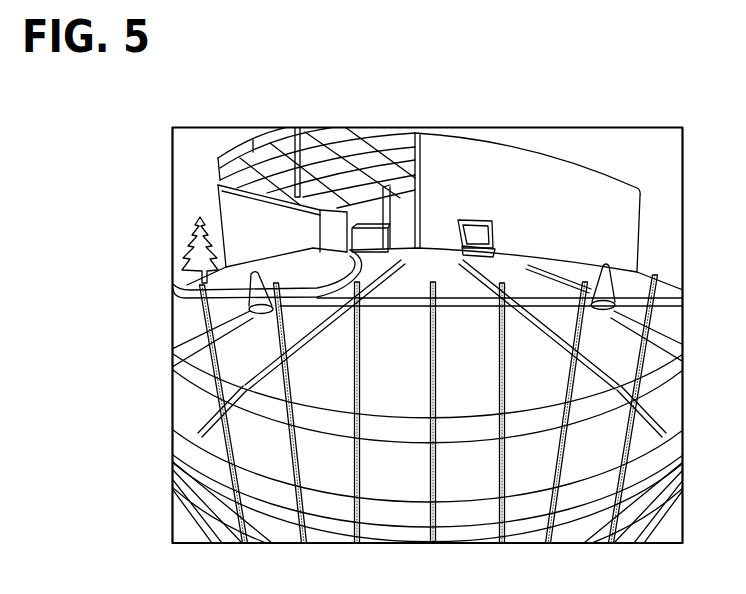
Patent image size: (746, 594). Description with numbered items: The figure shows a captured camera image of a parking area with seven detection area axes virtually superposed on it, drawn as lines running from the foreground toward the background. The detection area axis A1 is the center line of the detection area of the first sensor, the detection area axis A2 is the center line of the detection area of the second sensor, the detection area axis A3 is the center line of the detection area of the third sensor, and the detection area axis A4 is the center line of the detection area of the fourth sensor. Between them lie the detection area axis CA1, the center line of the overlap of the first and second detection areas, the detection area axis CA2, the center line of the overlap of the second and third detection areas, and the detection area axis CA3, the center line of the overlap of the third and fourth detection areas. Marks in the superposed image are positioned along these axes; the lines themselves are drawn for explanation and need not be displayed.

The detection area axis A1 is at (227, 430).
The detection area axis CA1 is at (298, 429).
The detection area axis A2 is at (358, 429).
The detection area axis CA2 is at (433, 429).
The detection area axis A3 is at (502, 429).
The detection area axis CA3 is at (562, 429).
The detection area axis A4 is at (628, 425).